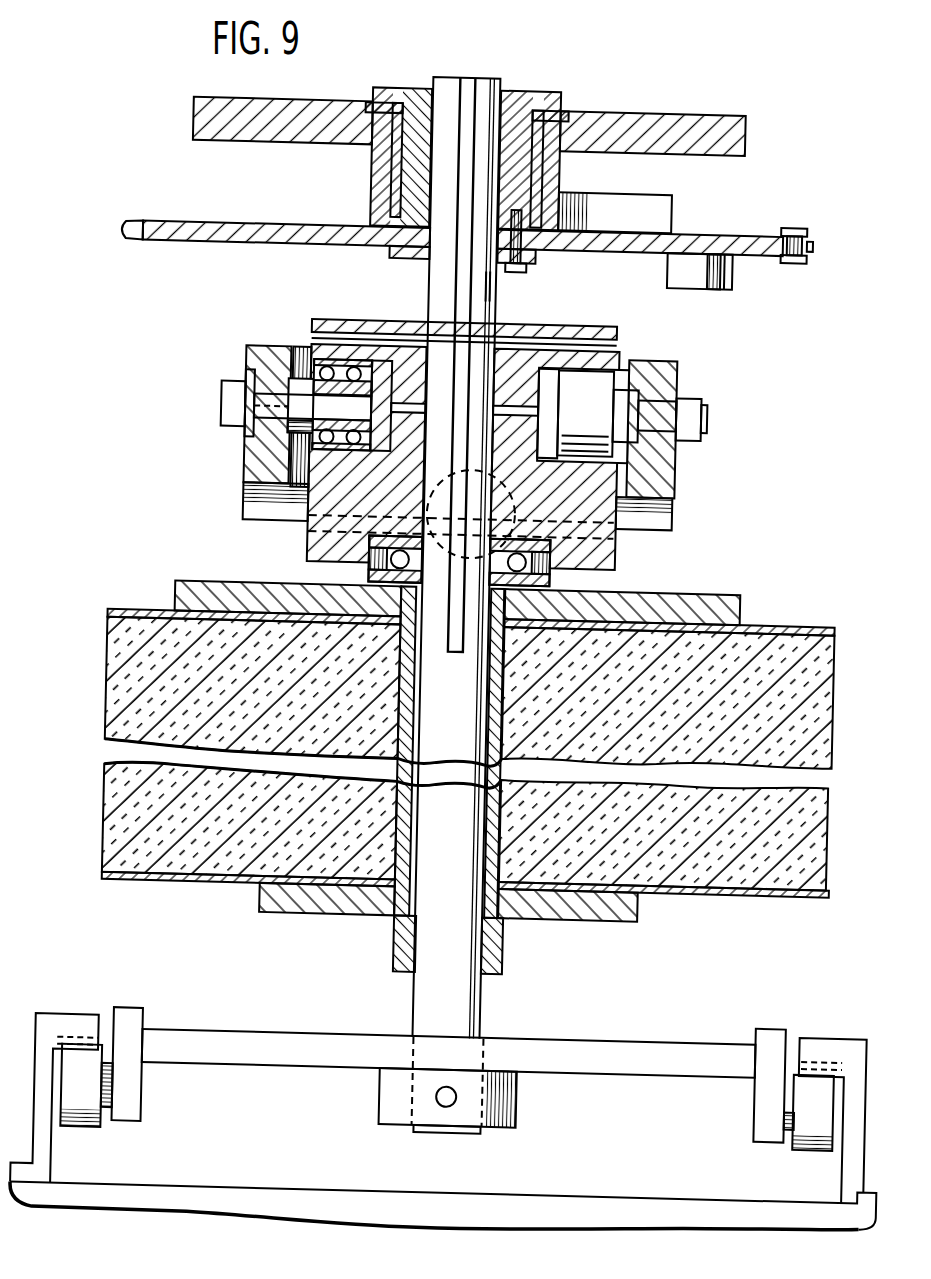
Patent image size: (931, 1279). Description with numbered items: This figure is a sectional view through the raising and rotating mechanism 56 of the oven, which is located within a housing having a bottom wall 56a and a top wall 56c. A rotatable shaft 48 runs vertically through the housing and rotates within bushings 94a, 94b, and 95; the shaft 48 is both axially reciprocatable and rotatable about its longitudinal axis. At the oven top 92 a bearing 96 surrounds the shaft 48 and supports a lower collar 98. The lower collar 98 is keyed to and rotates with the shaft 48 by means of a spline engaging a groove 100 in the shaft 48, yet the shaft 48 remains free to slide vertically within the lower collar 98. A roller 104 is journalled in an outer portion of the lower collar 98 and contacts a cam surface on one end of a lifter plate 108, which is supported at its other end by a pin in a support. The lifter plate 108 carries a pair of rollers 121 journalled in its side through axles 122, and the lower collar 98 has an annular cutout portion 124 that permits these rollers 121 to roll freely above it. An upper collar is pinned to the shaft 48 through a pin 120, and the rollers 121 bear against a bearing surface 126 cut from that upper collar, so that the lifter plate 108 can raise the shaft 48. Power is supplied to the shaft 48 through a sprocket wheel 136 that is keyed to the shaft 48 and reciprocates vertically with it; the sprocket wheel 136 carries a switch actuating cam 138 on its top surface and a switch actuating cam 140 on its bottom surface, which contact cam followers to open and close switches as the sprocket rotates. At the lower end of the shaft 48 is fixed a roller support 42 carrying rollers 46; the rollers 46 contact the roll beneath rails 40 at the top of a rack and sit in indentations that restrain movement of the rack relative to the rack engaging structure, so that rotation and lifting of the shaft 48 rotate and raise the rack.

The rails 40 is at (88, 1030).
The roller support 42 is at (292, 1042).
The rollers 46 is at (98, 1130).
The rotatable shaft 48 is at (494, 79).
The raising and rotating mechanism 56 is at (470, 110).
The bottom wall 56a is at (696, 596).
The top wall 56c is at (632, 115).
The oven top 92 is at (768, 640).
The bushing 94a is at (530, 110).
The bushing 94b is at (485, 652).
The bushing 95 is at (500, 945).
The bearing 96 is at (545, 577).
The lower collar 98 is at (600, 542).
The groove 100 is at (468, 288).
The roller 104 is at (305, 540).
The lifter plate 108 is at (262, 462).
The pin 120 is at (613, 330).
The rollers 121 is at (569, 401).
The axles 122 is at (222, 412).
The annular cutout portion 124 is at (537, 442).
The bearing surface 126 is at (375, 360).
The sprocket wheel 136 is at (752, 232).
The switch actuating cam 138 is at (653, 206).
The switch actuating cam 140 is at (718, 274).